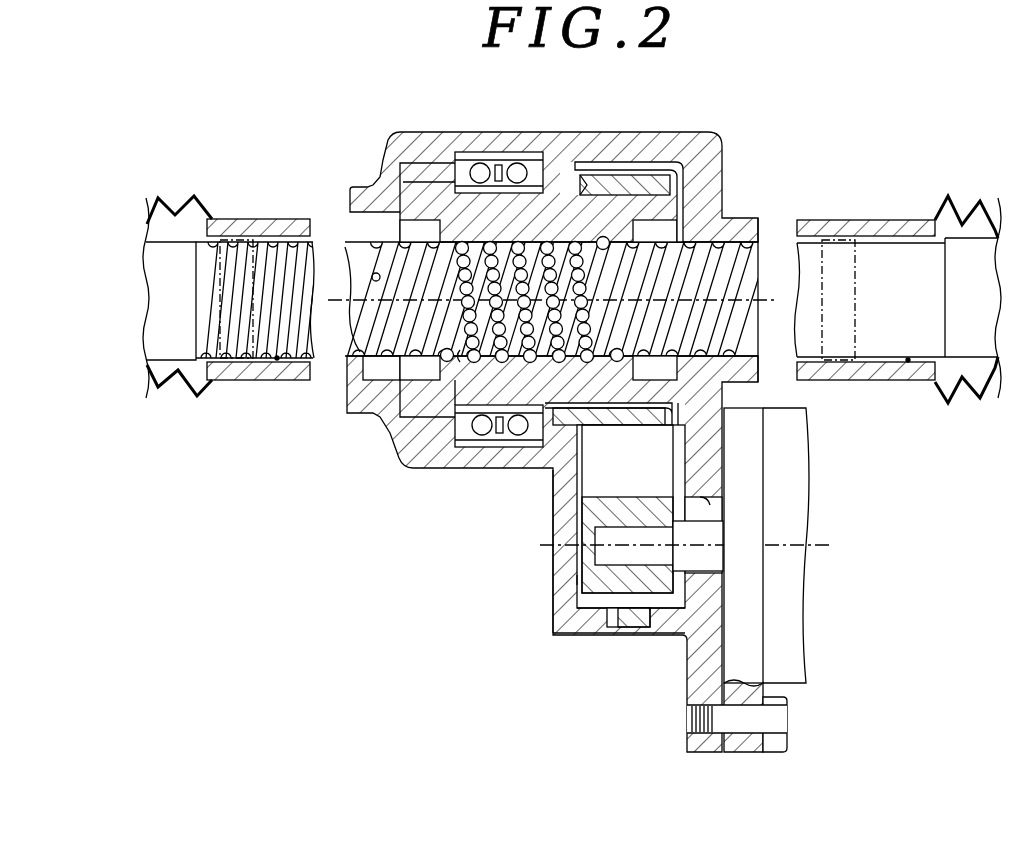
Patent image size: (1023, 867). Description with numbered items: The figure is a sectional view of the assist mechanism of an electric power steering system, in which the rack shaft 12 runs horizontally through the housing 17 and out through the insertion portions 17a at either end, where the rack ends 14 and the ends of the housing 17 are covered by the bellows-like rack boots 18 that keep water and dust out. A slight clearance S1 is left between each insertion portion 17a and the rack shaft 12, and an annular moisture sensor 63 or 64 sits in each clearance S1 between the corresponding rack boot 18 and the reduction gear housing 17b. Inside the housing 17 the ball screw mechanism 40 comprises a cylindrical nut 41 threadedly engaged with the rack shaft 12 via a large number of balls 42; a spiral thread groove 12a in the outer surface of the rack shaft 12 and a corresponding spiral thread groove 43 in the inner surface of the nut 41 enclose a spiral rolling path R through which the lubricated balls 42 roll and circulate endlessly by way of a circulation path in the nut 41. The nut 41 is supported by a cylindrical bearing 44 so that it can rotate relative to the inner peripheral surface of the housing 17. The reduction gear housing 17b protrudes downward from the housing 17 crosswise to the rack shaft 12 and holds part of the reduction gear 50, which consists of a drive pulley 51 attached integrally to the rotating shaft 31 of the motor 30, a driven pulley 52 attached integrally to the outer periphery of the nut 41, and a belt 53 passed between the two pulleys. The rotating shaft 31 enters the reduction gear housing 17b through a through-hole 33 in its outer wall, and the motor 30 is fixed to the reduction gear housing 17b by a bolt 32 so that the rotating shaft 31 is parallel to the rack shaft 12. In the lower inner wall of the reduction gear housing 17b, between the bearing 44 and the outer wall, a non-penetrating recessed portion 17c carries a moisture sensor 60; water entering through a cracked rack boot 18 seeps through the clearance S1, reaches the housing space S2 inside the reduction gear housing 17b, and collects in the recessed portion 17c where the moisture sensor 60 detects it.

The rack shaft 12 is at (350, 222).
The thread groove 12a is at (372, 280).
The rack ends 14 is at (152, 398).
The housing 17 is at (358, 187).
The insertion portions 17a is at (262, 383).
The reduction gear housing 17b is at (555, 620).
The recessed portion 17c is at (603, 608).
The rack boots 18 is at (190, 198).
The motor 30 is at (809, 690).
The rotating shaft 31 is at (708, 573).
The bolt 32 is at (790, 722).
The through-hole 33 is at (708, 488).
The ball screw mechanism 40 is at (397, 420).
The nut 41 is at (428, 422).
The balls 42 is at (528, 350).
The thread groove 43 is at (500, 322).
The bearing 44 is at (497, 437).
The reduction gear 50 is at (583, 477).
The drive pulley 51 is at (555, 615).
The driven pulley 52 is at (550, 137).
The belt 53 is at (578, 532).
The moisture sensor 60 is at (627, 620).
The moisture sensor 63 is at (221, 340).
The moisture sensor 64 is at (857, 340).
The rolling path R is at (460, 362).
The clearance S1 is at (277, 360).
The housing space S2 is at (577, 580).